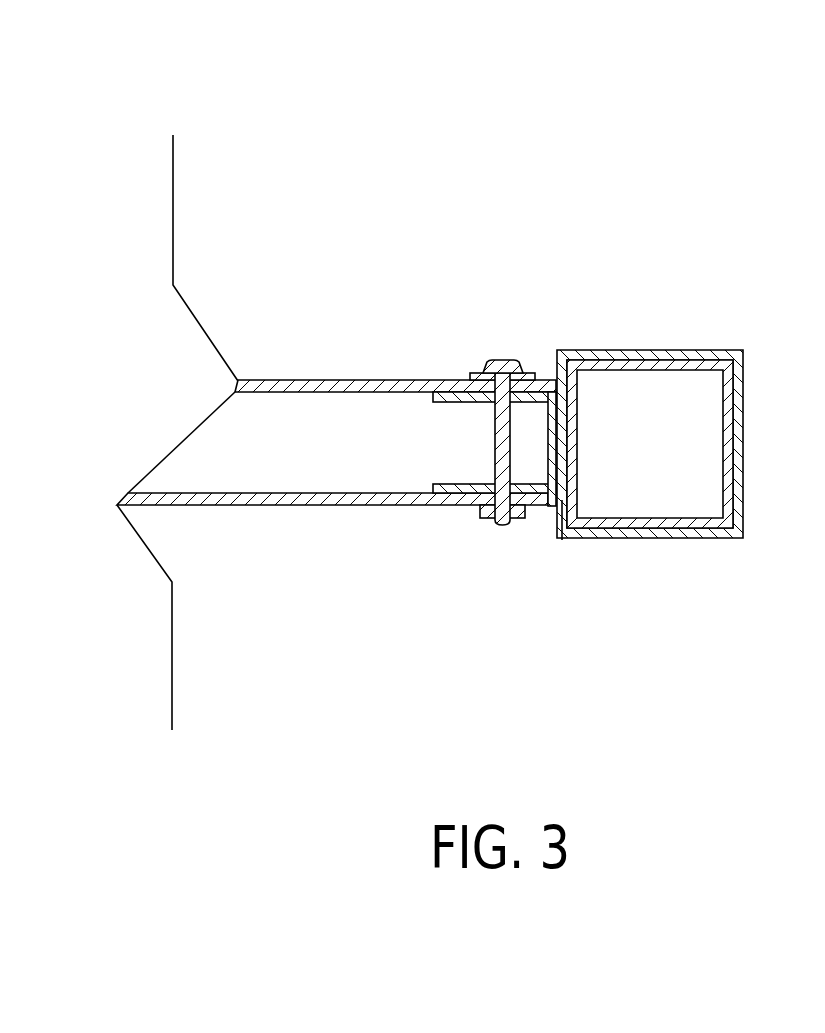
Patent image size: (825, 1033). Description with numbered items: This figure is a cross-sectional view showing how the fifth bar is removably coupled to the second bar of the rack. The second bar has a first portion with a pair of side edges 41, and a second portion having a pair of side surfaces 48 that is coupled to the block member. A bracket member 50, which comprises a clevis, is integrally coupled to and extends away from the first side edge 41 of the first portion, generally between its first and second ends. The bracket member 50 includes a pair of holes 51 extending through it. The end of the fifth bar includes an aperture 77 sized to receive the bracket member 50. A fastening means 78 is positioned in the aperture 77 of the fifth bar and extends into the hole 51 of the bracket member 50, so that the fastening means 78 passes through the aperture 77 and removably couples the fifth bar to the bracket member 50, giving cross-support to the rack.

The aperture 77 is at (392, 458).
The bracket member 50 is at (548, 393).
The hole 51 is at (512, 383).
The fastening means 78 is at (490, 363).
The side surface 48 is at (730, 438).
The side edge 41 is at (560, 540).